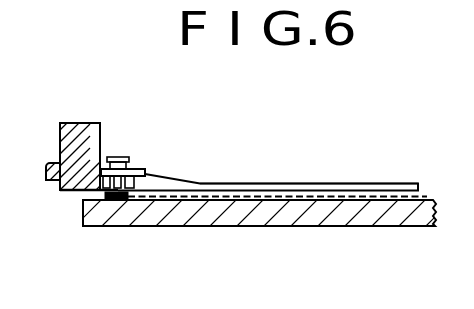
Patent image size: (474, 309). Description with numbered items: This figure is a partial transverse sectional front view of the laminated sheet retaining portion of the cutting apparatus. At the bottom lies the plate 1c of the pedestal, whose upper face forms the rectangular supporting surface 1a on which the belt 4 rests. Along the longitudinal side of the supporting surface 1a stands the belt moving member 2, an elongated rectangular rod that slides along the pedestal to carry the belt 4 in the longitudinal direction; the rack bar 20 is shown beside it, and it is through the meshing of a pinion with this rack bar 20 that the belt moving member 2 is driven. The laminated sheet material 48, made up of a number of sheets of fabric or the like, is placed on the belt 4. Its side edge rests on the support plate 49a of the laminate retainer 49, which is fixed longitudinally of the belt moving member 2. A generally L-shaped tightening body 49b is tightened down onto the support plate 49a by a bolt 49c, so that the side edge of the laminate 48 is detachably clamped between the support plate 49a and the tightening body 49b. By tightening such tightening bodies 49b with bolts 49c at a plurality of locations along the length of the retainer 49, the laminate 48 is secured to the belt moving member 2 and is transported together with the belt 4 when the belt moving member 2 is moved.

The supporting surface 1a is at (325, 210).
The plate 1c is at (231, 212).
The belt moving member 2 is at (81, 141).
The rack bar 20 is at (54, 163).
The belt 4 is at (380, 196).
The laminated sheet material 48 is at (290, 183).
The laminate retainer 49 is at (259, 182).
The support plate 49a is at (112, 200).
The tightening body 49b is at (147, 170).
The bolt 49c is at (132, 158).